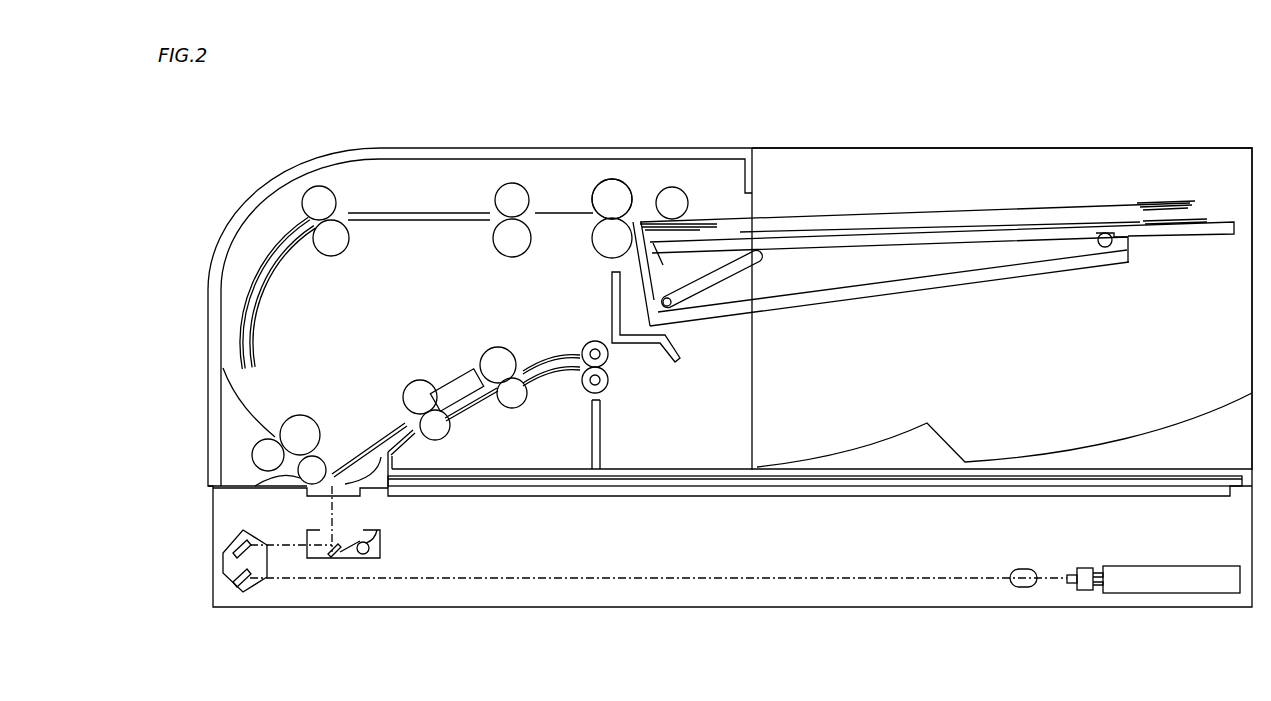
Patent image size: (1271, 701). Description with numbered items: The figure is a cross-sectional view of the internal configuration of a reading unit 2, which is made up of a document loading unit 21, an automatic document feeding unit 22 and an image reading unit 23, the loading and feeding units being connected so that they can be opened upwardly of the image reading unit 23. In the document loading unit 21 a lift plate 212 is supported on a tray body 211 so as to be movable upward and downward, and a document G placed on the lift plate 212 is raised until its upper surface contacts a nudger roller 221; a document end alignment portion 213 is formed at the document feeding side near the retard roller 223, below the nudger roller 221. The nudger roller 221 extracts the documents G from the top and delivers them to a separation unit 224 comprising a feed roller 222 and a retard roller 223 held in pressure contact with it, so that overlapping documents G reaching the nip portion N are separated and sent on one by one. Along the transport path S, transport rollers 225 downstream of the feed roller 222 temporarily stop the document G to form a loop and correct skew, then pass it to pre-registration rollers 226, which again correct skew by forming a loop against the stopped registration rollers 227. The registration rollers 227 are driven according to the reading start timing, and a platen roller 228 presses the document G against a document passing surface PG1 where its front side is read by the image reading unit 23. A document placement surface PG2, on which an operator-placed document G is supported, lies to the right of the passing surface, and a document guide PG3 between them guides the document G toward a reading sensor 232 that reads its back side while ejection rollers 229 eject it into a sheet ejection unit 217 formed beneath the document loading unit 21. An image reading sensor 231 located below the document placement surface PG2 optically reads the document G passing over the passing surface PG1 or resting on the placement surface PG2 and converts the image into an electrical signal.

The reading unit 2 is at (259, 158).
The document loading unit 21 is at (830, 193).
The automatic document feeding unit 22 is at (438, 305).
The image reading unit 23 is at (751, 546).
The tray body 211 is at (902, 292).
The lift plate 212 is at (963, 237).
The document end alignment portion 213 is at (660, 280).
The sheet ejection unit 217 is at (1070, 457).
The nudger roller 221 is at (672, 200).
The feed roller 222 is at (611, 190).
The retard roller 223 is at (612, 240).
The separation unit 224 is at (592, 193).
The transport rollers 225 is at (492, 193).
The pre-registration rollers 226 is at (340, 192).
The registration rollers 227 is at (281, 418).
The platen roller 228 is at (313, 470).
The ejection rollers 229 is at (615, 370).
The image reading sensor 231 is at (1085, 572).
The reading sensor 232 is at (466, 392).
The transport path S is at (488, 213).
The nip portion N is at (627, 217).
The document G is at (920, 218).
The document passing surface PG1 is at (318, 492).
The document placement surface PG2 is at (658, 490).
The document guide PG3 is at (397, 462).